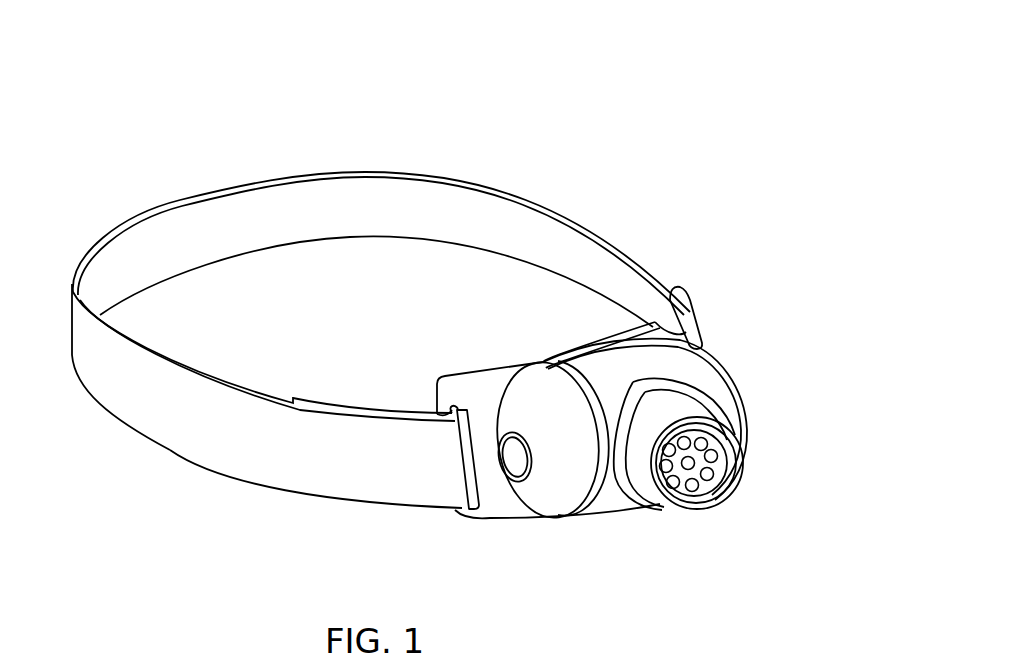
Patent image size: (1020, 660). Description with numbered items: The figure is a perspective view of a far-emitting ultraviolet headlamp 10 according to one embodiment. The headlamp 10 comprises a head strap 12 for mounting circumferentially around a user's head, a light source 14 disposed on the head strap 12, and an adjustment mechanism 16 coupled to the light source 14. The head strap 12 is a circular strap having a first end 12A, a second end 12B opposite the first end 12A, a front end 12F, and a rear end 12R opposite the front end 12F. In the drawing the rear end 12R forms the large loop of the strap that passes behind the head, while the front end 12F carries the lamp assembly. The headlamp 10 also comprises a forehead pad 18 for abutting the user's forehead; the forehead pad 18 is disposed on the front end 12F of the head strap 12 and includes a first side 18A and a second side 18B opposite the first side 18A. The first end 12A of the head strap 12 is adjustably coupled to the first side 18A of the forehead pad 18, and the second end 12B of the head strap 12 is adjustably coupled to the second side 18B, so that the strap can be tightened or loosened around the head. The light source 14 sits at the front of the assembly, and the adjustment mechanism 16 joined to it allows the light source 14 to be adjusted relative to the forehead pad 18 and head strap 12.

The far-emitting ultraviolet headlamp 10 is at (585, 120).
The head strap 12 is at (470, 337).
The rear end 12R is at (173, 236).
The first end 12A is at (463, 430).
The second end 12B is at (702, 318).
The front end 12F is at (542, 548).
The light source 14 is at (707, 473).
The adjustment mechanism 16 is at (677, 367).
The forehead pad 18 is at (491, 339).
The first side 18A is at (470, 452).
The second side 18B is at (655, 328).